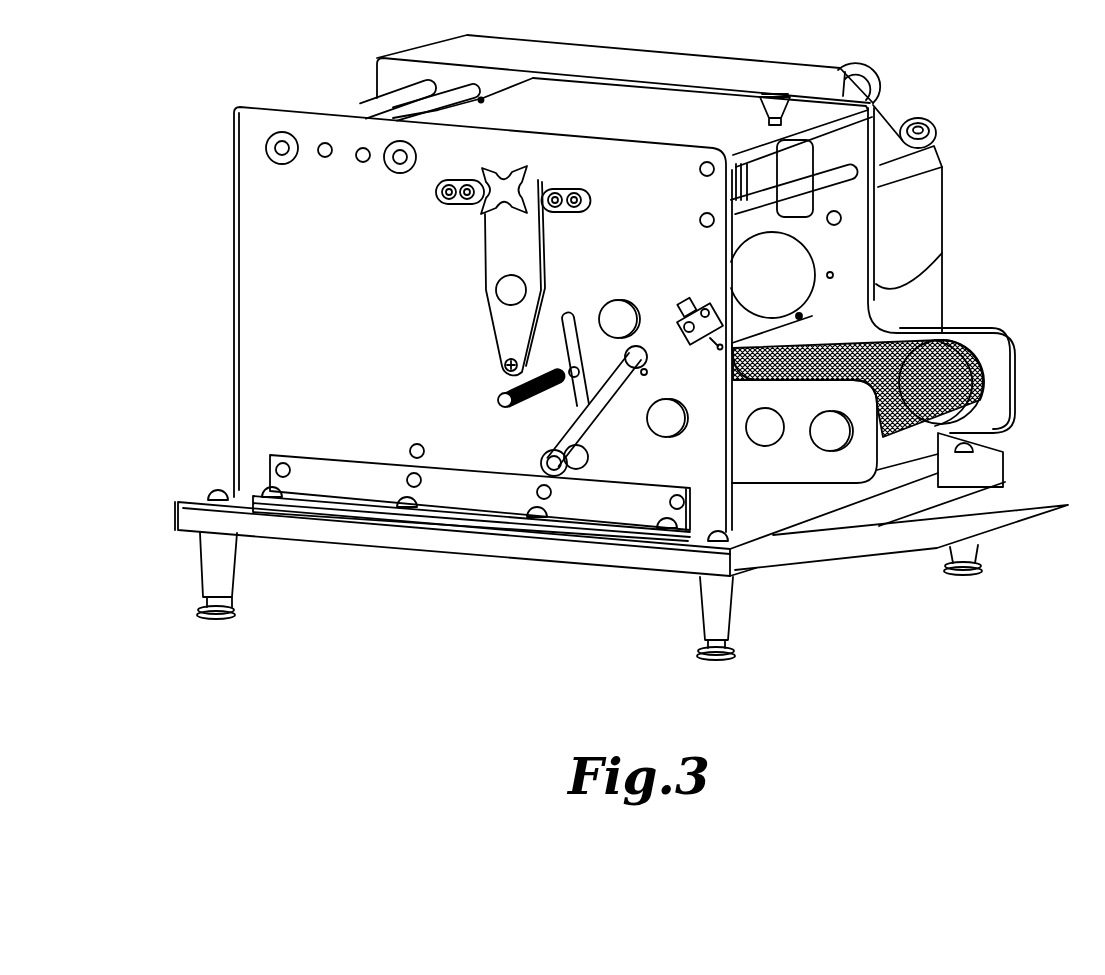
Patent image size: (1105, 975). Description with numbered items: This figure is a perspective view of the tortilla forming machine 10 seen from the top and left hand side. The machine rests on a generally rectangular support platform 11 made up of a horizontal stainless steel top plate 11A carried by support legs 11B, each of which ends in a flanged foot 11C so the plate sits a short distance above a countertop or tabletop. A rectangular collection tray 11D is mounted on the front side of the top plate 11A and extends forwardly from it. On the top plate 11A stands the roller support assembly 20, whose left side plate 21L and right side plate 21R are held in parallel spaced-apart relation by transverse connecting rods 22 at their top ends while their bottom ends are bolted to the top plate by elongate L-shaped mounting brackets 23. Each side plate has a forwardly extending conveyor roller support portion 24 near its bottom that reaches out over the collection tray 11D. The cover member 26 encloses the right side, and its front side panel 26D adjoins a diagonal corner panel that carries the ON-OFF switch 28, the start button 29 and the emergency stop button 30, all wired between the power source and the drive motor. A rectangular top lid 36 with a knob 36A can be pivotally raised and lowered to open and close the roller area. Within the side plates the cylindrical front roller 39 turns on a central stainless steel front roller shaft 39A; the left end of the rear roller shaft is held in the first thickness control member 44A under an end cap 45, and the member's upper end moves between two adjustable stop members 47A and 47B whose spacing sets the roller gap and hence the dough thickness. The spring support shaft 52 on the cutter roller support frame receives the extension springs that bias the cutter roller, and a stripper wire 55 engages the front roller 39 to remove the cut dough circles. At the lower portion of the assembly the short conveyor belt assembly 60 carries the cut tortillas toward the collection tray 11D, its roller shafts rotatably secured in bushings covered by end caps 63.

The tortilla forming machine 10 is at (990, 104).
The support platform 11 is at (138, 537).
The top plate 11A is at (196, 500).
The support legs 11B is at (230, 580).
The flanged foot 11C is at (222, 619).
The collection tray 11D is at (935, 532).
The roller support assembly 20 is at (212, 317).
The left side plate 21L is at (356, 320).
The right side plate 21R is at (944, 272).
The transverse connecting rods 22 is at (741, 222).
The L-shaped mounting brackets 23 is at (607, 505).
The conveyor roller support portion 24 is at (990, 334).
The cover member 26 is at (952, 231).
The front side panel 26D is at (930, 256).
The ON-OFF switch 28 is at (847, 85).
The start button 29 is at (874, 86).
The emergency stop button 30 is at (940, 137).
The top lid 36 is at (632, 131).
The knob 36A is at (762, 106).
The front roller 39 is at (772, 294).
The front roller shaft 39A is at (621, 314).
The first thickness control member 44A is at (497, 245).
The end cap 45 is at (504, 292).
The stop member 47A is at (438, 200).
The stop member 47B is at (594, 203).
The spring support shaft 52 is at (588, 418).
The stripper wire 55 is at (800, 331).
The conveyor belt assembly 60 is at (910, 442).
The end caps 63 is at (666, 424).